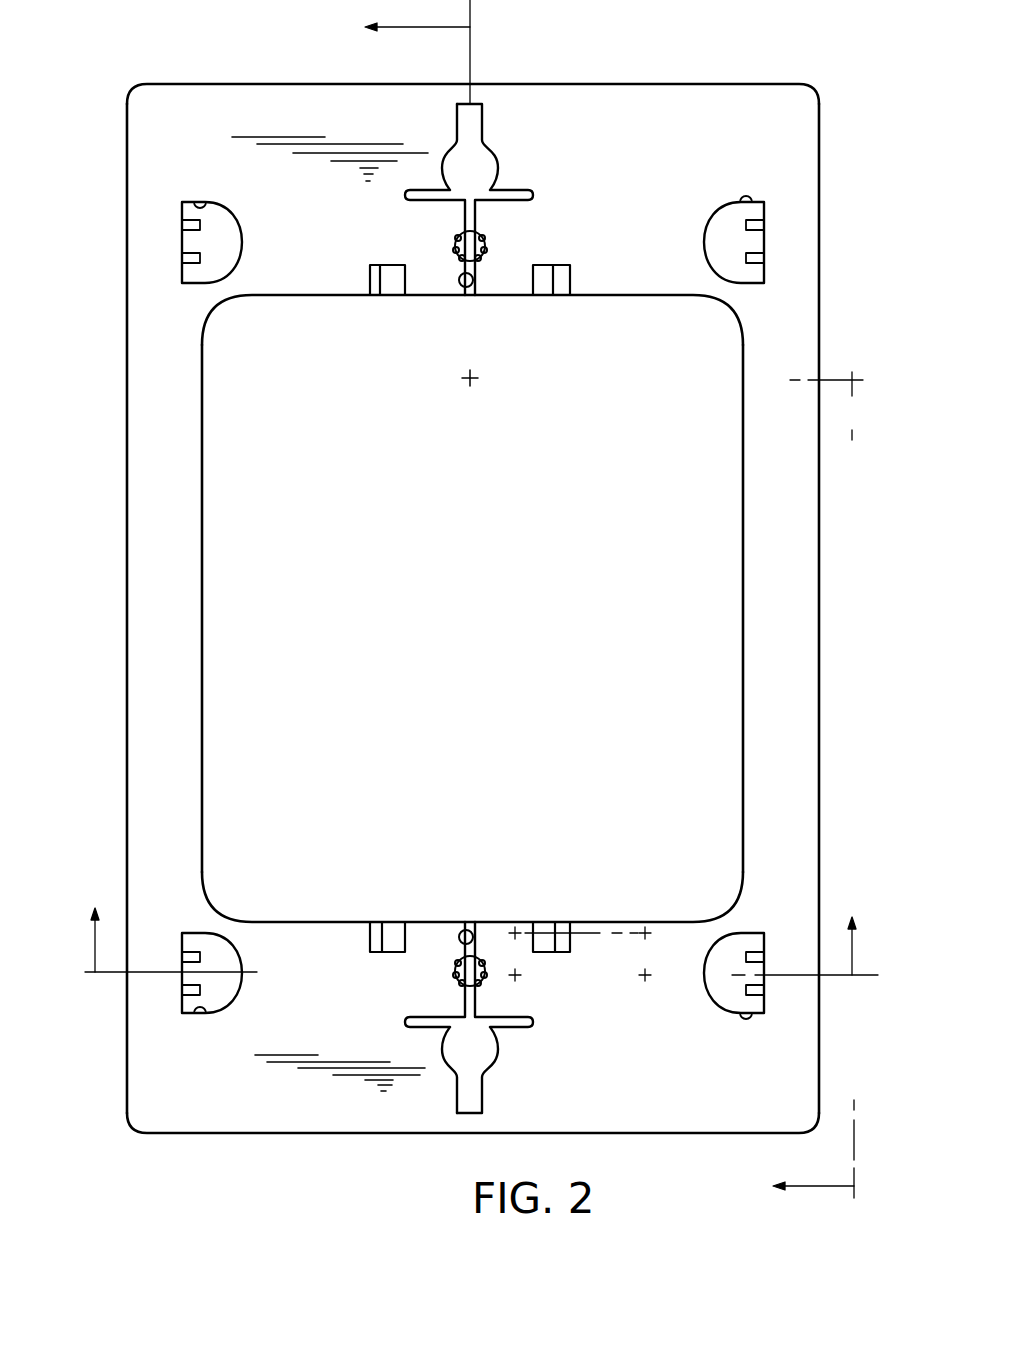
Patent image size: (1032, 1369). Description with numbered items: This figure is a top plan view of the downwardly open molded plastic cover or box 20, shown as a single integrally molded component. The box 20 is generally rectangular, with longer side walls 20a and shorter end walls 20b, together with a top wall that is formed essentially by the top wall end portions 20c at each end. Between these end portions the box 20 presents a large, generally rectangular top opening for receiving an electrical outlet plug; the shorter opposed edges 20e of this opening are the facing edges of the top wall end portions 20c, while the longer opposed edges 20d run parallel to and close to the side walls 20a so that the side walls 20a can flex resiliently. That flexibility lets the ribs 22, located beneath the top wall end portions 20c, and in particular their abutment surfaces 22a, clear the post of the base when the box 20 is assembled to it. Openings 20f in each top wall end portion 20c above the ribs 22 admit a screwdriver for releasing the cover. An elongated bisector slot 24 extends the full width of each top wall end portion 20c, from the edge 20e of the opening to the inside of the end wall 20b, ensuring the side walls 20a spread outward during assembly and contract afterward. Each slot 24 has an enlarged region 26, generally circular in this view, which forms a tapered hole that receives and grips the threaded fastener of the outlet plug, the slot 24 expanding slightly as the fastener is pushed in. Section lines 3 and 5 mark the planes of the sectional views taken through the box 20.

The molded plastic cover or box 20 is at (473, 591).
The side walls 20a is at (127, 643).
The end walls 20b is at (560, 84).
The top wall end portions 20c is at (305, 114).
The longer opposed edges 20d is at (240, 545).
The opposed edges 20e is at (600, 298).
The openings 20f is at (200, 206).
The ribs 22 is at (480, 614).
The abutment surfaces 22a is at (215, 283).
The bisector slot 24 is at (467, 287).
The enlarged region or fastener hole 26 is at (479, 240).
The section line 3- 3 is at (623, 618).
The section line 5- 5 is at (474, 964).